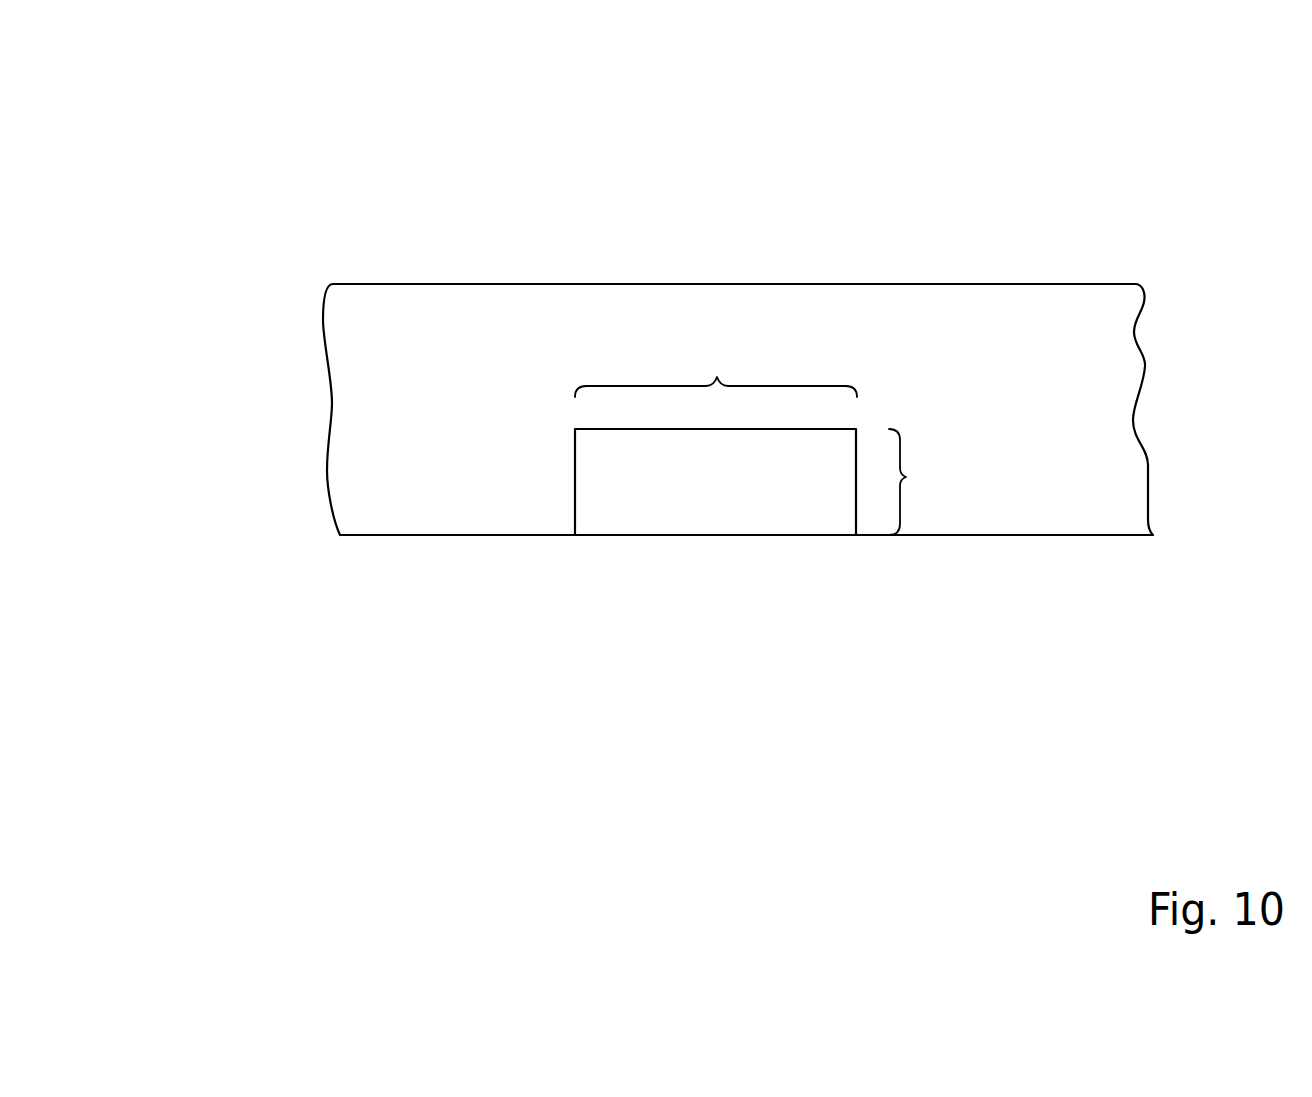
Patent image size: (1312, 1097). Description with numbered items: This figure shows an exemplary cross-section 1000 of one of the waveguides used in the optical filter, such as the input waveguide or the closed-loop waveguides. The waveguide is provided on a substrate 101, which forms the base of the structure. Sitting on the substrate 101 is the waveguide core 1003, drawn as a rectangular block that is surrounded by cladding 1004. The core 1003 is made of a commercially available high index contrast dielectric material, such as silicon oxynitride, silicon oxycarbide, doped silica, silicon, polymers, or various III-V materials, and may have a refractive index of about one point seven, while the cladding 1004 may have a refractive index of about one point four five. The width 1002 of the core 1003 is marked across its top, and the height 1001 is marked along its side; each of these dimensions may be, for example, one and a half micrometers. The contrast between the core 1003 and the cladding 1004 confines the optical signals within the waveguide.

The cross-section 1000 is at (990, 168).
The substrate 101 is at (400, 537).
The cladding 1004 is at (331, 403).
The waveguide core 1003 is at (717, 500).
The width 1002 is at (716, 376).
The height 1001 is at (905, 476).